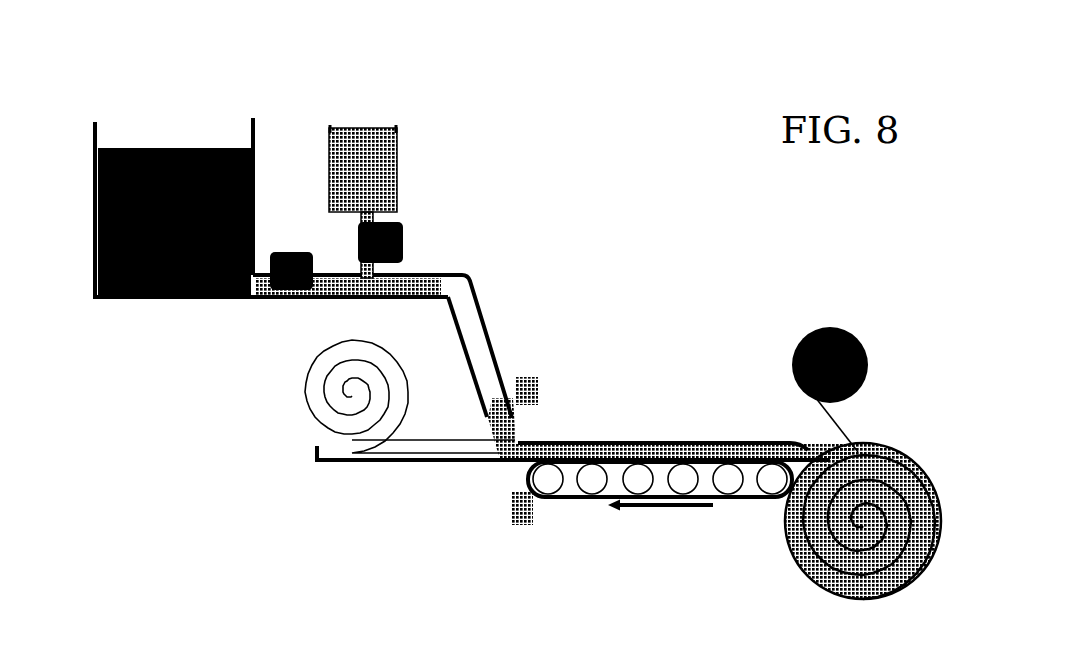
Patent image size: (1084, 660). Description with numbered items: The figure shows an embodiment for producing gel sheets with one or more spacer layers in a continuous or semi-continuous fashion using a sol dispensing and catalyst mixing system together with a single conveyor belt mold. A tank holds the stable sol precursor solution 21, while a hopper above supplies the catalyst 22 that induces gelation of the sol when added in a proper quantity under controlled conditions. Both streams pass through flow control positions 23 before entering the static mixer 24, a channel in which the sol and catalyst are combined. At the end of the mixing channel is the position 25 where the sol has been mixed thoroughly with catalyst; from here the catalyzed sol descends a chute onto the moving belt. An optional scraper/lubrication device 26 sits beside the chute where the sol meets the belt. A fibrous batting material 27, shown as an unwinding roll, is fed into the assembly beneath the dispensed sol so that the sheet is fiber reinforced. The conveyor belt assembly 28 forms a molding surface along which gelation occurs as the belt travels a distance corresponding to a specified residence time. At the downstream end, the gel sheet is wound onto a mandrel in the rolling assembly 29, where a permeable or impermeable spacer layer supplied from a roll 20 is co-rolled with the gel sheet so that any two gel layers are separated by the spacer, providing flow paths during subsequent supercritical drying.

The press roll 20 is at (845, 332).
The stable sol precursor solution 21 is at (176, 208).
The catalyst 22 is at (353, 117).
The flow control positions 23 is at (310, 232).
The static mixer 24 is at (411, 261).
The position where sol has been mixed thoroughly with catalyst 25 is at (466, 271).
The scraper/lubrication device 26 is at (547, 380).
The fibrous batting material 27 is at (284, 399).
The conveyor belt assembly 28 is at (737, 518).
The rolling assembly 29 is at (873, 449).